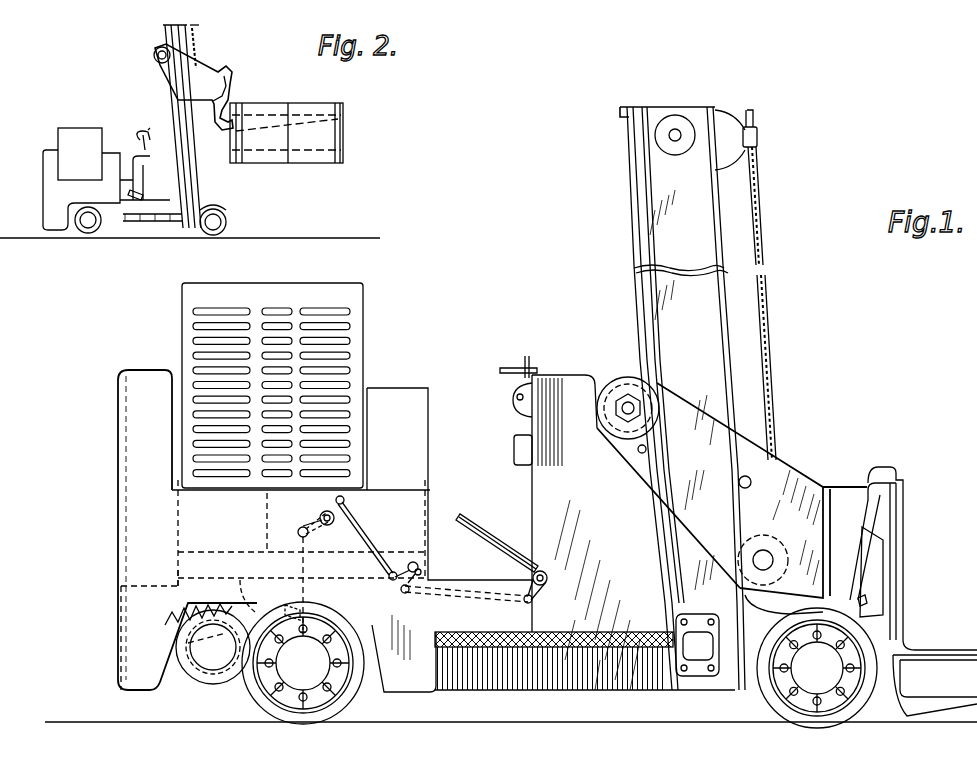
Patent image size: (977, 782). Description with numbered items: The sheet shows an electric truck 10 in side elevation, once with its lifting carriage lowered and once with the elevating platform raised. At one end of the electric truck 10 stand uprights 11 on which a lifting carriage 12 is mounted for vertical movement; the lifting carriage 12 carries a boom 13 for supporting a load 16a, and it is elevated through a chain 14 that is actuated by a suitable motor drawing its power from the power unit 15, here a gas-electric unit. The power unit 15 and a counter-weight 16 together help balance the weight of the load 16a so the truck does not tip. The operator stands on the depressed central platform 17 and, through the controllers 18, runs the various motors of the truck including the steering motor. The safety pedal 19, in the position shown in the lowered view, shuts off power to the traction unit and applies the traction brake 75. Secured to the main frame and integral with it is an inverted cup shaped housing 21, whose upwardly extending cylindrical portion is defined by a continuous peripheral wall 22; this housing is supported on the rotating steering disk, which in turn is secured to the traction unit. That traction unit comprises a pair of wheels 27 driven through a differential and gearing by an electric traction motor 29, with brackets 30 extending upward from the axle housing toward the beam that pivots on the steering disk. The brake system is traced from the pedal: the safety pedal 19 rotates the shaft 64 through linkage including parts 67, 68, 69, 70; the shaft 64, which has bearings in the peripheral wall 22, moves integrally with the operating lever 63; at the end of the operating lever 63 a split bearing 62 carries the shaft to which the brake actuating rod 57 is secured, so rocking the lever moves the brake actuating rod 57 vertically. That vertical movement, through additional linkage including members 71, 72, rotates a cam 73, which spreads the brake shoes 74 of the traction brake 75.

In FIG. 2, the electric truck 10 is at (119, 118).
In FIG. 1, the electric truck 10 is at (482, 316).
In FIG. 2, the uprights 11 is at (185, 163).
In FIG. 1, the uprights 11 is at (655, 213).
In FIG. 2, the lifting carriage 12 is at (207, 77).
In FIG. 1, the lifting carriage 12 is at (792, 483).
In FIG. 2, the boom 13 is at (345, 112).
In FIG. 2, the chain 14 is at (197, 45).
In FIG. 1, the chain 14 is at (761, 190).
In FIG. 2, the power unit 15 is at (70, 130).
In FIG. 1, the power unit 15 is at (366, 330).
In FIG. 2, the counter-weight 16 is at (46, 160).
In FIG. 1, the counter-weight 16 is at (118, 462).
In FIG. 2, the load 16a is at (352, 139).
In FIG. 2, the depressed central platform 17 is at (134, 205).
In FIG. 1, the depressed central platform 17 is at (478, 580).
In FIG. 2, the controllers 18 is at (140, 138).
In FIG. 1, the controllers 18 is at (503, 384).
In FIG. 2, the safety pedal 19 is at (132, 195).
In FIG. 1, the safety pedal 19 is at (484, 524).
In FIG. 1, the inverted cup shaped housing 21 is at (392, 548).
In FIG. 1, the continuous peripheral wall 22 is at (265, 503).
In FIG. 1, the wheels 27 is at (275, 706).
In FIG. 1, the electric traction motor 29 is at (198, 697).
In FIG. 1, the brackets 30 is at (378, 646).
In FIG. 1, the brake actuating rod 57 is at (310, 560).
In FIG. 1, the split bearing 62 is at (299, 534).
In FIG. 1, the operating lever 63 is at (318, 518).
In FIG. 1, the shaft 64 is at (336, 526).
In FIG. 1, the linkage part 67 is at (347, 499).
In FIG. 1, the linkage part 68 is at (374, 540).
In FIG. 1, the linkage part 69 is at (419, 566).
In FIG. 1, the linkage part 70 is at (456, 600).
In FIG. 1, the linkage member 71 is at (305, 606).
In FIG. 1, the linkage member 72 is at (247, 602).
In FIG. 1, the cam 73 is at (182, 612).
In FIG. 1, the brake shoes 74 is at (188, 648).
In FIG. 1, the traction brake 75 is at (198, 668).